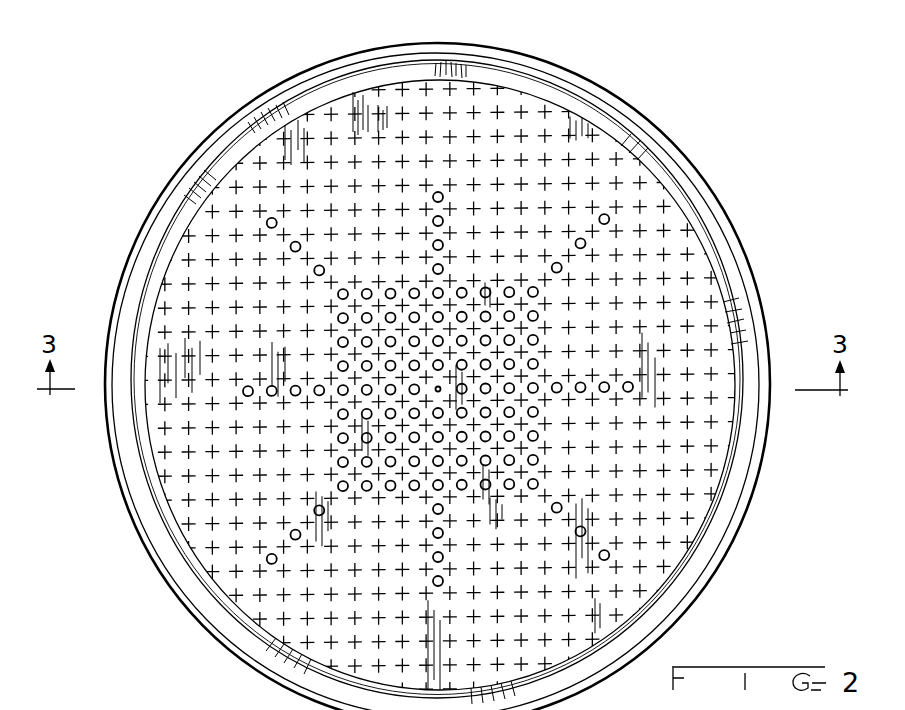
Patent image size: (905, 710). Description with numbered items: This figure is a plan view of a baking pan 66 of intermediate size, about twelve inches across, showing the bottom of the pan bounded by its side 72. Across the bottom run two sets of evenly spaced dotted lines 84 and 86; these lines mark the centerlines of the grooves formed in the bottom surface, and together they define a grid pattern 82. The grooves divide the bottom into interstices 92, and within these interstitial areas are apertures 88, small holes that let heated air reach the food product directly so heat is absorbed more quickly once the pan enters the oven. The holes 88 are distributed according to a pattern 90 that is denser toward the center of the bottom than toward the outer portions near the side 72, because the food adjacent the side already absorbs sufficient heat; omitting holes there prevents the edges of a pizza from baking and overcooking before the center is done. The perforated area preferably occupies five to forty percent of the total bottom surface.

The pan 66 is at (673, 125).
The side 72 is at (173, 591).
The grid pattern 82 is at (665, 242).
The dotted lines 84 is at (550, 153).
The dotted lines 86 is at (358, 117).
The apertures 88 is at (290, 243).
The pattern 90 is at (300, 335).
The interstices 92 is at (270, 196).